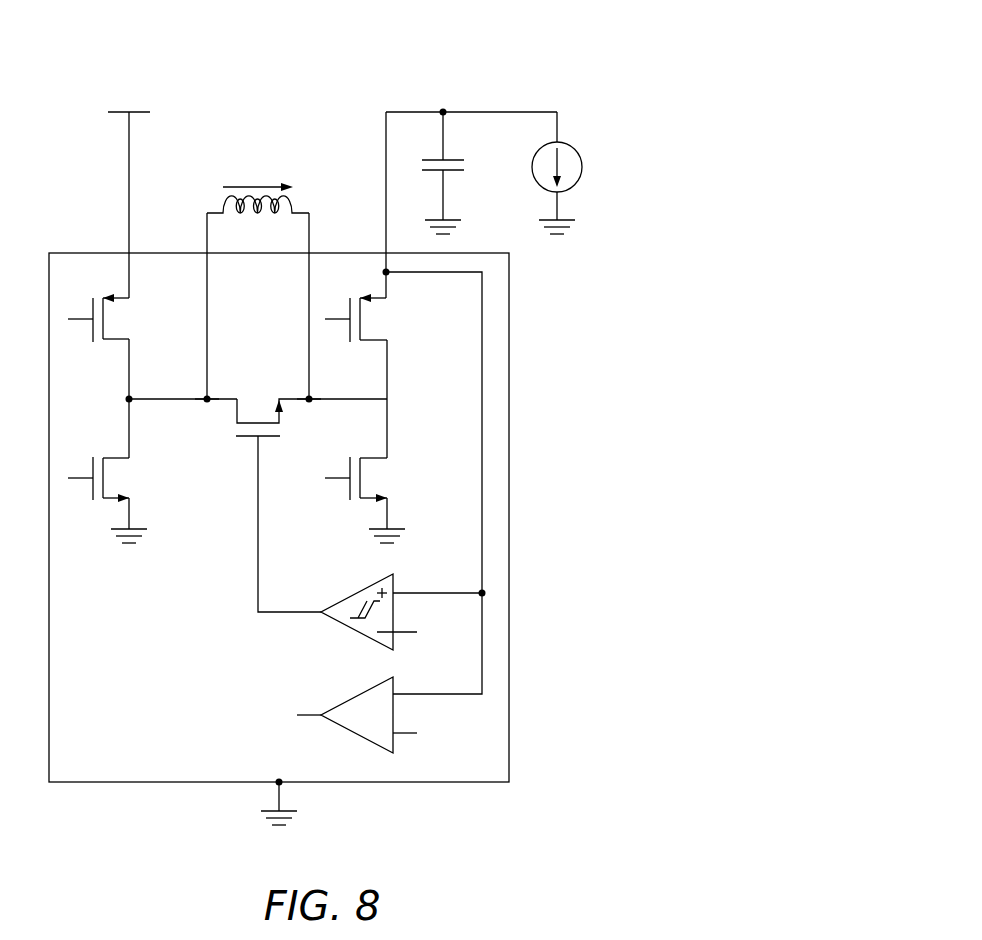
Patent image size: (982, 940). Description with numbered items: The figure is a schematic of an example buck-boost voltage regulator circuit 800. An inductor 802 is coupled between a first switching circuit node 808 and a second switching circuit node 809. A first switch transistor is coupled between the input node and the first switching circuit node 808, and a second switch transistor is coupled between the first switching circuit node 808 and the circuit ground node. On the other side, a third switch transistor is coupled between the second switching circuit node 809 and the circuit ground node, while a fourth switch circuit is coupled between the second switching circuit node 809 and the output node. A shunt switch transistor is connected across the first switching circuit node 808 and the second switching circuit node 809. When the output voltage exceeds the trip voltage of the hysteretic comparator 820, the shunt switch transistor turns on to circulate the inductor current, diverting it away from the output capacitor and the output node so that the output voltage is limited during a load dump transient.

The buck-boost voltage regulator circuit 800 is at (531, 48).
The inductor 802 is at (294, 199).
The first switching circuit node 808 is at (205, 403).
The second switching circuit node 809 is at (311, 403).
The hysteretic comparator 820 is at (359, 591).